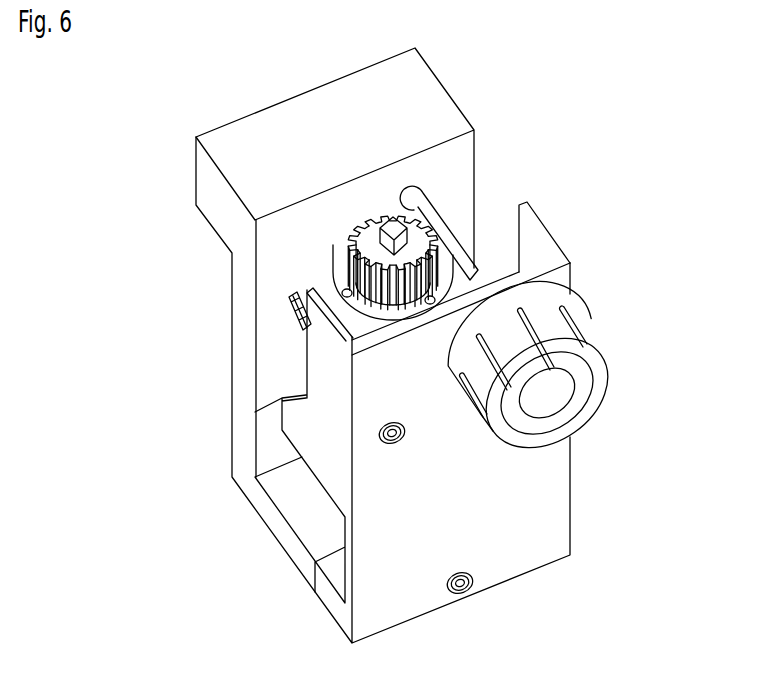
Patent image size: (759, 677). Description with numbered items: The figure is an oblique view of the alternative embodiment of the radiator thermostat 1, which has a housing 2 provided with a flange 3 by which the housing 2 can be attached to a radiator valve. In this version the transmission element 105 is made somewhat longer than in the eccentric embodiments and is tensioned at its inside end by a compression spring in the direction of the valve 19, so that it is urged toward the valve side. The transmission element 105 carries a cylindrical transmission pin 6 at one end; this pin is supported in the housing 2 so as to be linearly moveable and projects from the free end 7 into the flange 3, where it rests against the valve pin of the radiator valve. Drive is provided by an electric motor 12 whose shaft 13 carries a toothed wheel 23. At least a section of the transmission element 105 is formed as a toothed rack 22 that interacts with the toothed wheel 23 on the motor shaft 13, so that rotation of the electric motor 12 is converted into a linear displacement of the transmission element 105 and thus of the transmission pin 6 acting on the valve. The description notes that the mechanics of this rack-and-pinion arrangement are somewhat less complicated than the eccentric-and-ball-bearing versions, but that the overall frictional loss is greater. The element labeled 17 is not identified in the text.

The radiator thermostat 1 is at (188, 222).
The housing 2 is at (547, 240).
The flange 3 is at (540, 312).
The transmission pin 6 is at (537, 380).
The free end 7 is at (568, 431).
The electric motor 12 is at (353, 320).
The shaft 13 is at (390, 217).
The housing top arm 17 is at (265, 135).
The valve 19 is at (533, 138).
The toothed rack 22 is at (445, 247).
The toothed wheel 23 is at (353, 249).
The transmission element 105 is at (413, 200).